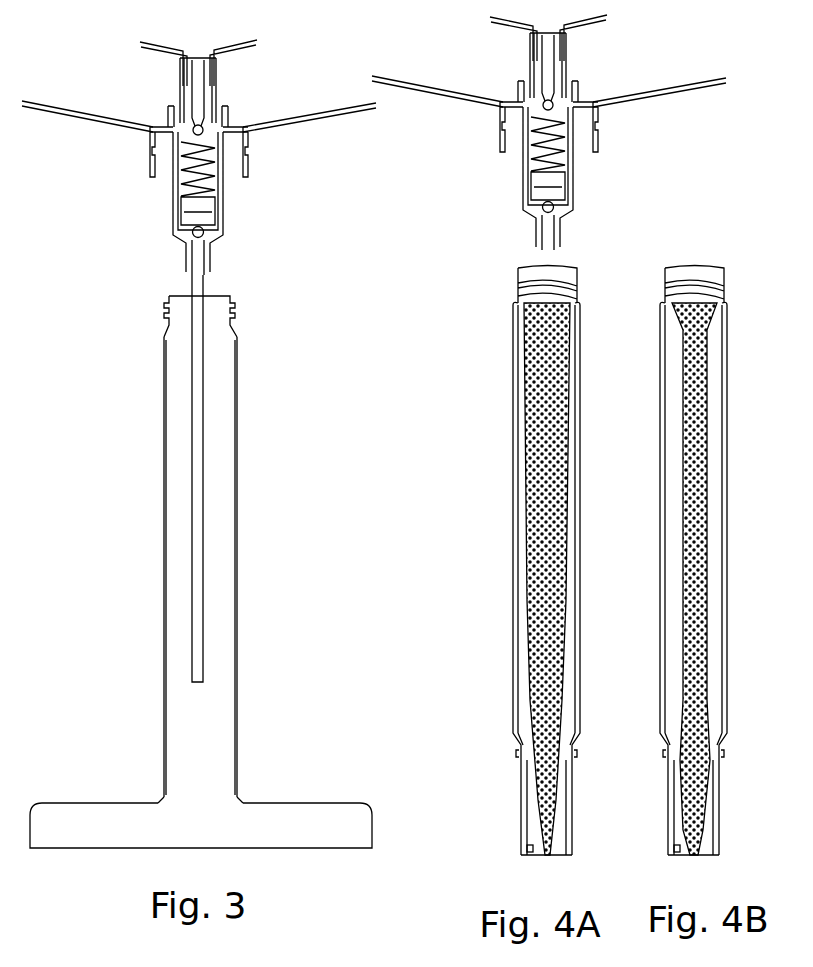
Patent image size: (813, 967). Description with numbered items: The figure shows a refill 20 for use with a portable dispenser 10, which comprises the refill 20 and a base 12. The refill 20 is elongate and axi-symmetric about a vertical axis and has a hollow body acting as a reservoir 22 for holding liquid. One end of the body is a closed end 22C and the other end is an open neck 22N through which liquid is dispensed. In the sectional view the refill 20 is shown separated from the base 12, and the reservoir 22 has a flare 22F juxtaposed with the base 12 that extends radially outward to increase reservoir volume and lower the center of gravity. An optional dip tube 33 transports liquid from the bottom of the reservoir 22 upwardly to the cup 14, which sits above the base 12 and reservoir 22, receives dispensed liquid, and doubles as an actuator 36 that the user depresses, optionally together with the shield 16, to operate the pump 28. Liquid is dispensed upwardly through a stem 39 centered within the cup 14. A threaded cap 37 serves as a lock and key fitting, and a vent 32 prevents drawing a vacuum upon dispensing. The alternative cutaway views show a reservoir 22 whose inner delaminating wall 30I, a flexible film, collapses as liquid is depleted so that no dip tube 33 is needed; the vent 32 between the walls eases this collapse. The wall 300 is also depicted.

In FIG. 3, the dispenser 10 is at (282, 575).
In FIG. 3, the base 12 is at (70, 808).
In FIG. 3, the cup 14 is at (248, 45).
In FIG. 4A, the cup 14 is at (597, 17).
In FIG. 3, the shield 16 is at (22, 108).
In FIG. 4A, the shield 16 is at (372, 85).
In FIG. 4A, the refill 20 is at (428, 40).
In FIG. 4B, the refill 20 is at (735, 851).
In FIG. 3, the reservoir 22 is at (168, 568).
In FIG. 4A, the reservoir 22 is at (527, 590).
In FIG. 4B, the reservoir 22 is at (643, 852).
In FIG. 3, the open neck 22N is at (223, 300).
In FIG. 4A, the open neck 22N is at (542, 268).
In FIG. 4B, the open neck 22N is at (688, 268).
In FIG. 3, the flare 22F is at (303, 810).
In FIG. 4A, the closed end 22C is at (548, 856).
In FIG. 4B, the closed end 22C is at (698, 856).
In FIG. 3, the pump 28 is at (154, 230).
In FIG. 4A, the pump 28 is at (503, 205).
In FIG. 4A, the inner delaminating wall 30I is at (558, 370).
In FIG. 4B, the inner delaminating wall 30I is at (688, 690).
In FIG. 3, the vent 32 is at (178, 140).
In FIG. 4A, the vent 32 is at (527, 114).
In FIG. 4B, the vent 32 is at (676, 852).
In FIG. 3, the dip tube 33 is at (200, 505).
In FIG. 3, the actuator 36 is at (148, 90).
In FIG. 4A, the actuator 36 is at (498, 63).
In FIG. 3, the cap 37 is at (250, 173).
In FIG. 4A, the cap 37 is at (600, 148).
In FIG. 3, the stem 39 is at (212, 252).
In FIG. 4A, the stem 39 is at (565, 230).
In FIG. 3, the container liner wall 300 is at (240, 487).
In FIG. 4A, the container liner wall 300 is at (513, 403).
In FIG. 4B, the container liner wall 300 is at (660, 588).